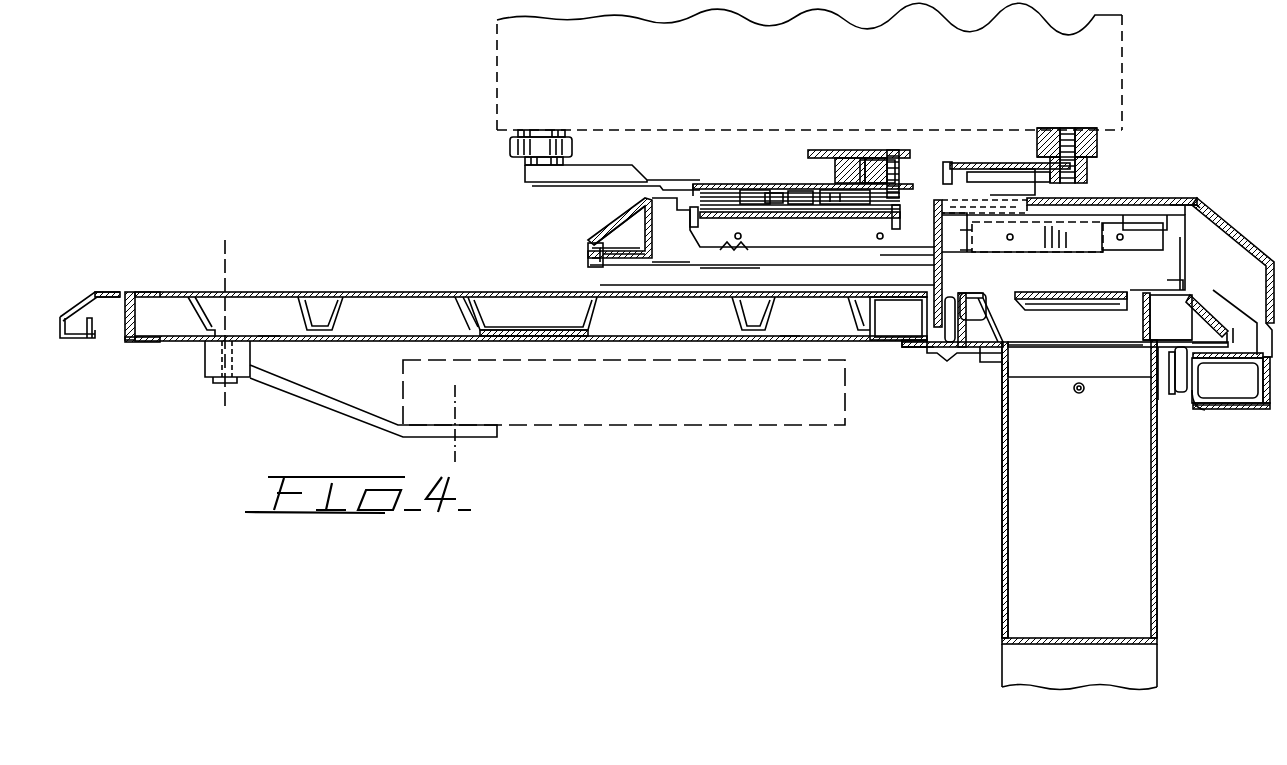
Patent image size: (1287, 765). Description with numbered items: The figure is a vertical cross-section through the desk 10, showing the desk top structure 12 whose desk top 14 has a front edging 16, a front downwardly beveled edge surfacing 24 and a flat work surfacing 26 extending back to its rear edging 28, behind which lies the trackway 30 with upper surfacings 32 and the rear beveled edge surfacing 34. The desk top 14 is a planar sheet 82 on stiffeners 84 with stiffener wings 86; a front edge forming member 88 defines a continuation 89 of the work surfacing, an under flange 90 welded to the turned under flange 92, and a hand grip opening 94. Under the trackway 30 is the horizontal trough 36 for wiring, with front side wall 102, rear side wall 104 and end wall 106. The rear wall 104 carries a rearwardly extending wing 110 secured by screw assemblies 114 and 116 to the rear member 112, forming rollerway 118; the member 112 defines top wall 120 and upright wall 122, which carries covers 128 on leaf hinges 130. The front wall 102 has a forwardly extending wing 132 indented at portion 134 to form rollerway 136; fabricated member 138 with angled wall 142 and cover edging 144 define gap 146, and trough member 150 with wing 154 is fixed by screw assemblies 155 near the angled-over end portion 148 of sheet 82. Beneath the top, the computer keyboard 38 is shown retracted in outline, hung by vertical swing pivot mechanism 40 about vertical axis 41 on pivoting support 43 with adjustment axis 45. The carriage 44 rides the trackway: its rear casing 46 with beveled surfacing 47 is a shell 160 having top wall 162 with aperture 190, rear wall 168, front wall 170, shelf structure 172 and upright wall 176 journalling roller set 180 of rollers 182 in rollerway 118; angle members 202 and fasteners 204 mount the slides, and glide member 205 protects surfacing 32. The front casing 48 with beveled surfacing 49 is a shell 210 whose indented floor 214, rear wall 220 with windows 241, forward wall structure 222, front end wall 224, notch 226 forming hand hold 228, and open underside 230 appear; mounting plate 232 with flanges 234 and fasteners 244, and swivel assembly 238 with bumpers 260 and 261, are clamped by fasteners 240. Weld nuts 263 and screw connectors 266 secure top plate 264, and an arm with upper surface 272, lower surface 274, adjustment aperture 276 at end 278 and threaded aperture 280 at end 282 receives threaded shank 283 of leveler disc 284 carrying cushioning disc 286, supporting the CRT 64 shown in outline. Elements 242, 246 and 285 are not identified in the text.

The desk 10 is at (240, 155).
The desk top structure 12 is at (300, 290).
The desk top 14 is at (222, 282).
The front edging 16 is at (62, 318).
The front downwardly beveled edge surfacing 24 is at (80, 305).
The work surfacing 26 is at (420, 290).
The rear edging of work surfacing 28 is at (898, 318).
The trackway 30 is at (1146, 162).
The upper surfacings 32 is at (960, 256).
The rear downwardly beveled edge surfacing 34 is at (1200, 303).
The horizontal trough 36 is at (1000, 582).
The computer keyboard 38 is at (662, 430).
The vertical swing pivot mechanism 40 is at (207, 380).
The vertical axis 41 is at (230, 296).
The pivoting support 43 is at (335, 428).
The carriage 44 is at (1215, 198).
The vertical axis 45 is at (460, 454).
The rear casing 46 is at (1180, 194).
The rear casing beveled edge surfacing 47 is at (1255, 250).
The front casing 48 is at (584, 247).
The forward downwardly beveled edge surfacing 49 is at (620, 238).
The CRT 64 is at (492, 65).
The planar sheet 82 is at (340, 292).
The stiffeners 84 is at (270, 348).
The stiffener wings 86 is at (190, 300).
The front edge forming member 88 is at (110, 290).
The continuation of work surfacing 89 is at (128, 292).
The under flange 90 is at (138, 343).
The turned under flange 92 is at (150, 295).
The hand grip opening 94 is at (101, 344).
The front side wall 102 is at (1002, 495).
The rear side wall 104 is at (1157, 505).
The end wall 106 is at (1002, 523).
The rearwardly extending wing 110 is at (1230, 331).
The desk top rear member 112 is at (1197, 300).
The screw assemblies 114 is at (1128, 350).
The screw assemblies 116 is at (1208, 366).
The rollerway 118 is at (1180, 392).
The top wall 120 is at (1172, 317).
The upright wall 122 is at (1143, 318).
The covers 128 is at (1040, 291).
The leaf hinges 130 is at (1140, 338).
The forwardly extending wing 132 is at (1000, 362).
The downwardly indented portion 134 is at (944, 355).
The upwardly facing rollerway 136 is at (905, 349).
The elongate fabricated member 138 is at (960, 298).
The angled wall 142 is at (1003, 312).
The cover edging 144 is at (1022, 302).
The elongate rectilinear gap 146 is at (986, 298).
The rearwardly angled over end portion 148 is at (905, 343).
The trough member 150 is at (953, 363).
The wing 154 is at (1005, 350).
The screw assemblies 155 is at (1006, 372).
The dished housing 160 is at (1198, 196).
The planar top wall 162 is at (1188, 195).
The rear wall 168 is at (1232, 392).
The forward wall 170 is at (934, 272).
The depending reinforced shelf structure 172 is at (1226, 410).
The upright wall 176 is at (1193, 412).
The set of rollers 180 is at (1158, 392).
The rollers 182 is at (1169, 380).
The elongate aperture 190 is at (1005, 192).
The angle members 202 is at (1130, 250).
The fasteners 204 is at (1138, 222).
The button type glide member 205 is at (1181, 275).
The front casing housing 210 is at (692, 185).
The downwardly indented center floor portion 214 is at (715, 210).
The depending rear wall 220 is at (875, 256).
The forward wall structure 222 is at (598, 238).
The upright front end wall 224 is at (590, 255).
The elongated notch 226 is at (630, 236).
The hand hold 228 is at (618, 252).
The open underside 230 is at (688, 270).
The mounting plate 232 is at (792, 230).
The depending flanges 234 is at (745, 252).
The swivel assembly 238 is at (738, 188).
The fasteners 240 is at (938, 186).
The windows 241 is at (960, 165).
The slide 242 is at (735, 270).
The fasteners 244 is at (875, 236).
The gear 246 is at (697, 184).
The bumper 260 is at (790, 190).
The bumper 261 is at (835, 150).
The weld nuts 263 is at (900, 155).
The top plate 264 is at (858, 158).
The Allen head screw connectors 266 is at (872, 150).
The upper surface 272 is at (627, 164).
The lower surface 274 is at (615, 185).
The elongate adjustment aperture 276 is at (900, 172).
The arm end 278 is at (840, 150).
The internally threaded aperture 280 is at (1042, 140).
The arm end 282 is at (1085, 183).
The threaded shank 283 is at (1067, 128).
The leveler disc 284 is at (1037, 140).
The block 285 is at (1092, 132).
The cushioning disc 286 is at (560, 130).